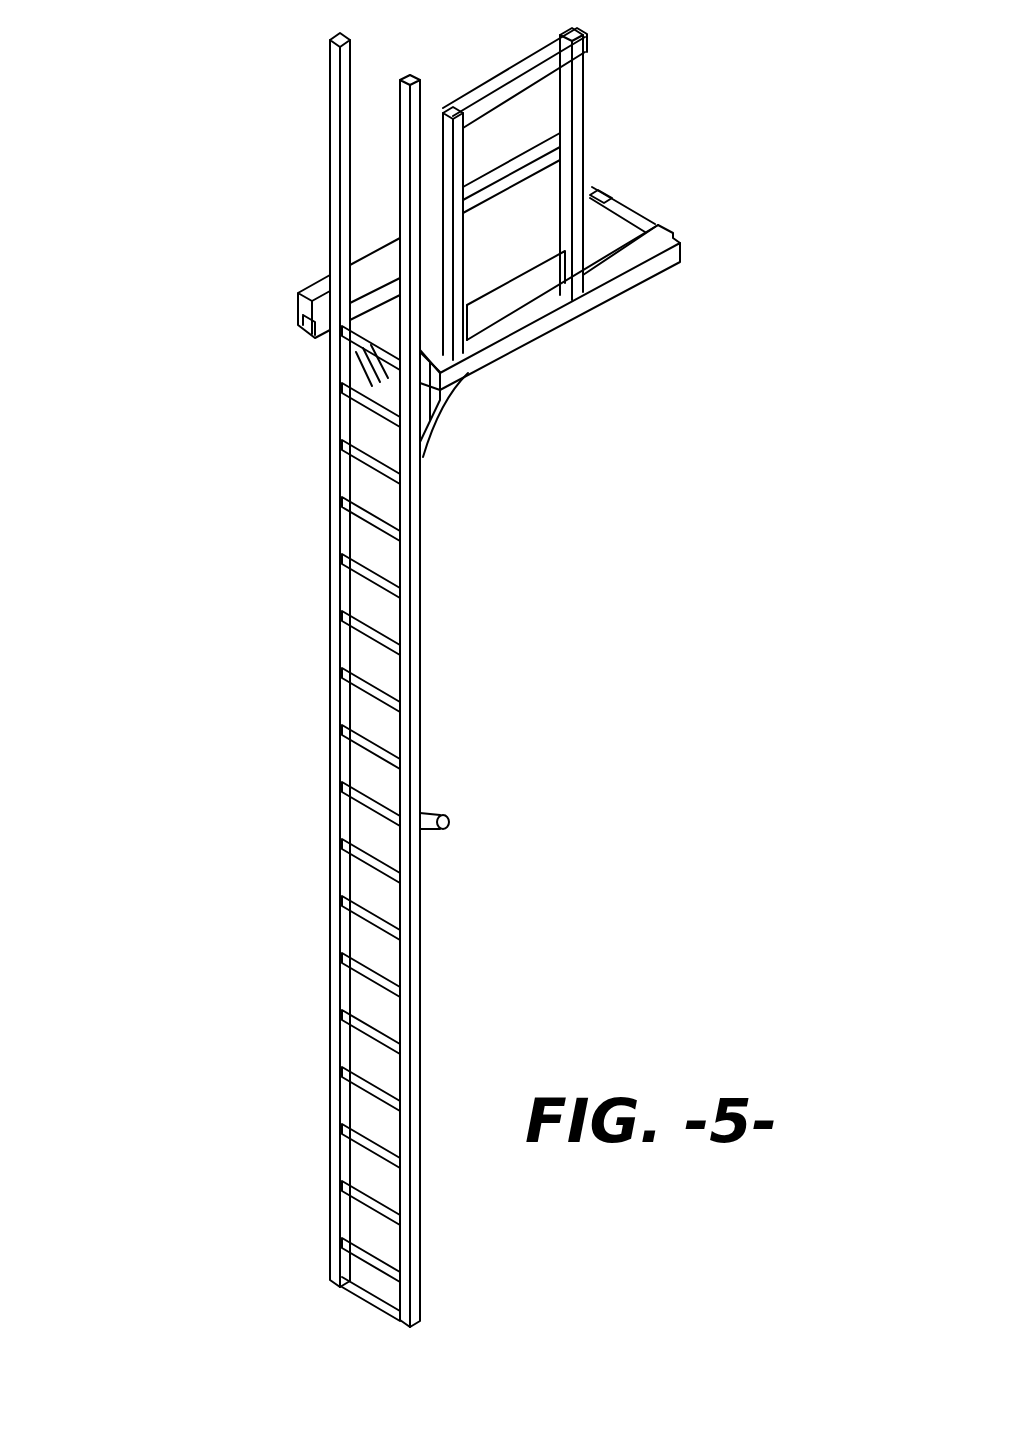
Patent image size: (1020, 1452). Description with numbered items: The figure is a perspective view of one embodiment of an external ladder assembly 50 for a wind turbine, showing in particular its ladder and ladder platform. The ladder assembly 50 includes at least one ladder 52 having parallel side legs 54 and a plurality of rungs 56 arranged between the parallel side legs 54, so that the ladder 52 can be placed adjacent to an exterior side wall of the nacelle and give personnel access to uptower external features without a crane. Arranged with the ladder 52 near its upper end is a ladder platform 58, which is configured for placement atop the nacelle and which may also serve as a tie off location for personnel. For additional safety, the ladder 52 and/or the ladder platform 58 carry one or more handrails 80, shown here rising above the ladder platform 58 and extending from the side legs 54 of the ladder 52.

The external ladder assembly 50 is at (185, 160).
The ladder 52 is at (416, 566).
The parallel side legs 54 is at (330, 1042).
The rungs 56 is at (368, 688).
The ladder platform 58 is at (617, 232).
The handrails 80 is at (407, 143).